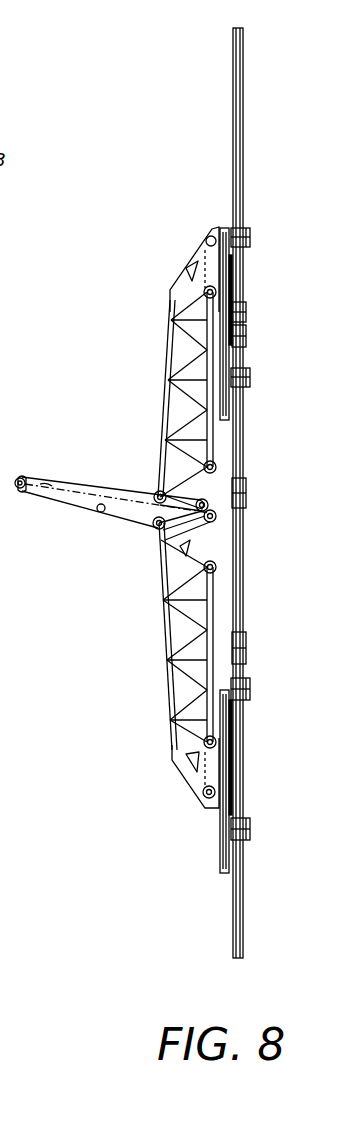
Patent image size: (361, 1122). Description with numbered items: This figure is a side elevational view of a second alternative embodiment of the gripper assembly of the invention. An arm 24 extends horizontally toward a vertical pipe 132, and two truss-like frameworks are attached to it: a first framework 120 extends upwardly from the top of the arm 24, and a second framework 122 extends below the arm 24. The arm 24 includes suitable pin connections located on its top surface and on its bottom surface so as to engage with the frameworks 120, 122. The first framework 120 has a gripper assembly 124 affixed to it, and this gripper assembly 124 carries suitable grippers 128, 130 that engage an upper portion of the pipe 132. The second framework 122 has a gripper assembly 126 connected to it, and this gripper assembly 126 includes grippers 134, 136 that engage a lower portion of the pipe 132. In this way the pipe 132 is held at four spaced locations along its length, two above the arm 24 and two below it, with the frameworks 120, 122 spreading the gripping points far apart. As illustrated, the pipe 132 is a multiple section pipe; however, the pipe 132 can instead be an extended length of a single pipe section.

The arm 24 is at (92, 504).
The first framework 120 is at (163, 404).
The second framework 122 is at (166, 655).
The gripper assembly 124 is at (218, 227).
The gripper assembly 126 is at (225, 840).
The gripper 128 is at (250, 235).
The gripper 130 is at (250, 373).
The pipe 132 is at (245, 97).
The gripper 134 is at (250, 683).
The gripper 136 is at (250, 826).